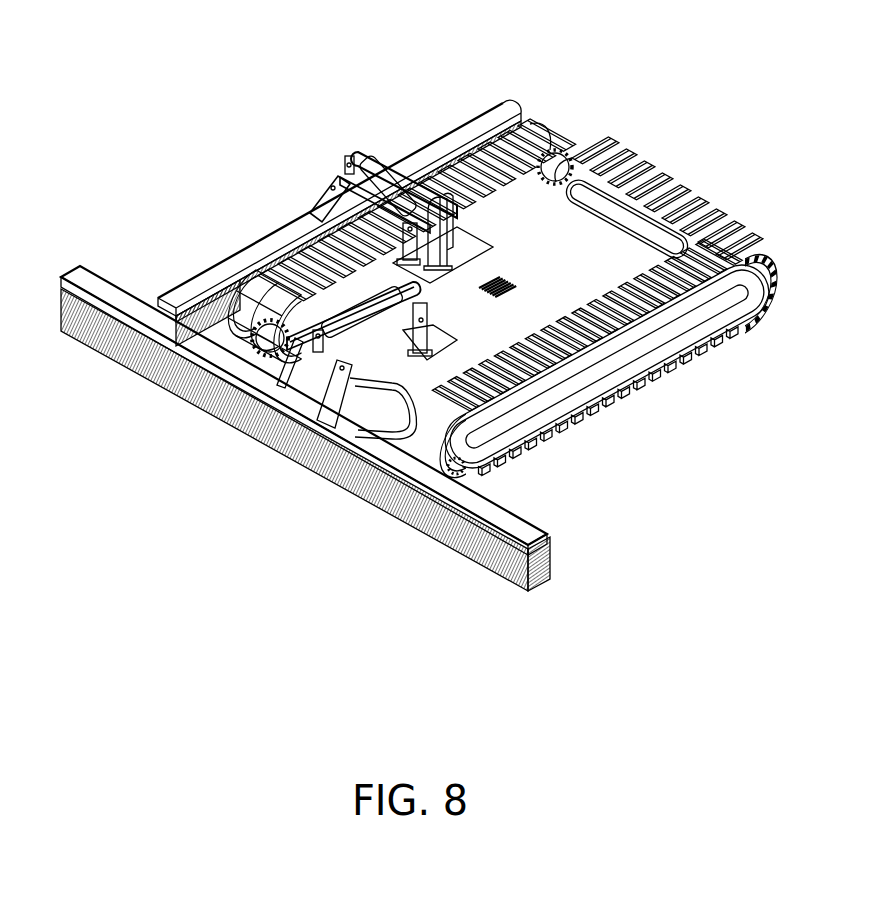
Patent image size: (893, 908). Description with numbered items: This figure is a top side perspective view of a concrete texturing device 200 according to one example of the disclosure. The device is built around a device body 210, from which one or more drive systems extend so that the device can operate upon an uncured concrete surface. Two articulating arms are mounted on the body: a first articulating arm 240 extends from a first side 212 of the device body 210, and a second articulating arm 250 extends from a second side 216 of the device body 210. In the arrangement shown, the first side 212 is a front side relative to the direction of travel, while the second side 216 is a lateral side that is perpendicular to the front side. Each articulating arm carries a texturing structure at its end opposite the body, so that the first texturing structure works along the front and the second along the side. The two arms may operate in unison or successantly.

The concrete texturing device 200 is at (156, 74).
The device body 210 is at (530, 195).
The first side 212 is at (390, 415).
The second side 216 is at (297, 243).
The first articulating arm 240 is at (307, 353).
The second articulating arm 250 is at (346, 165).